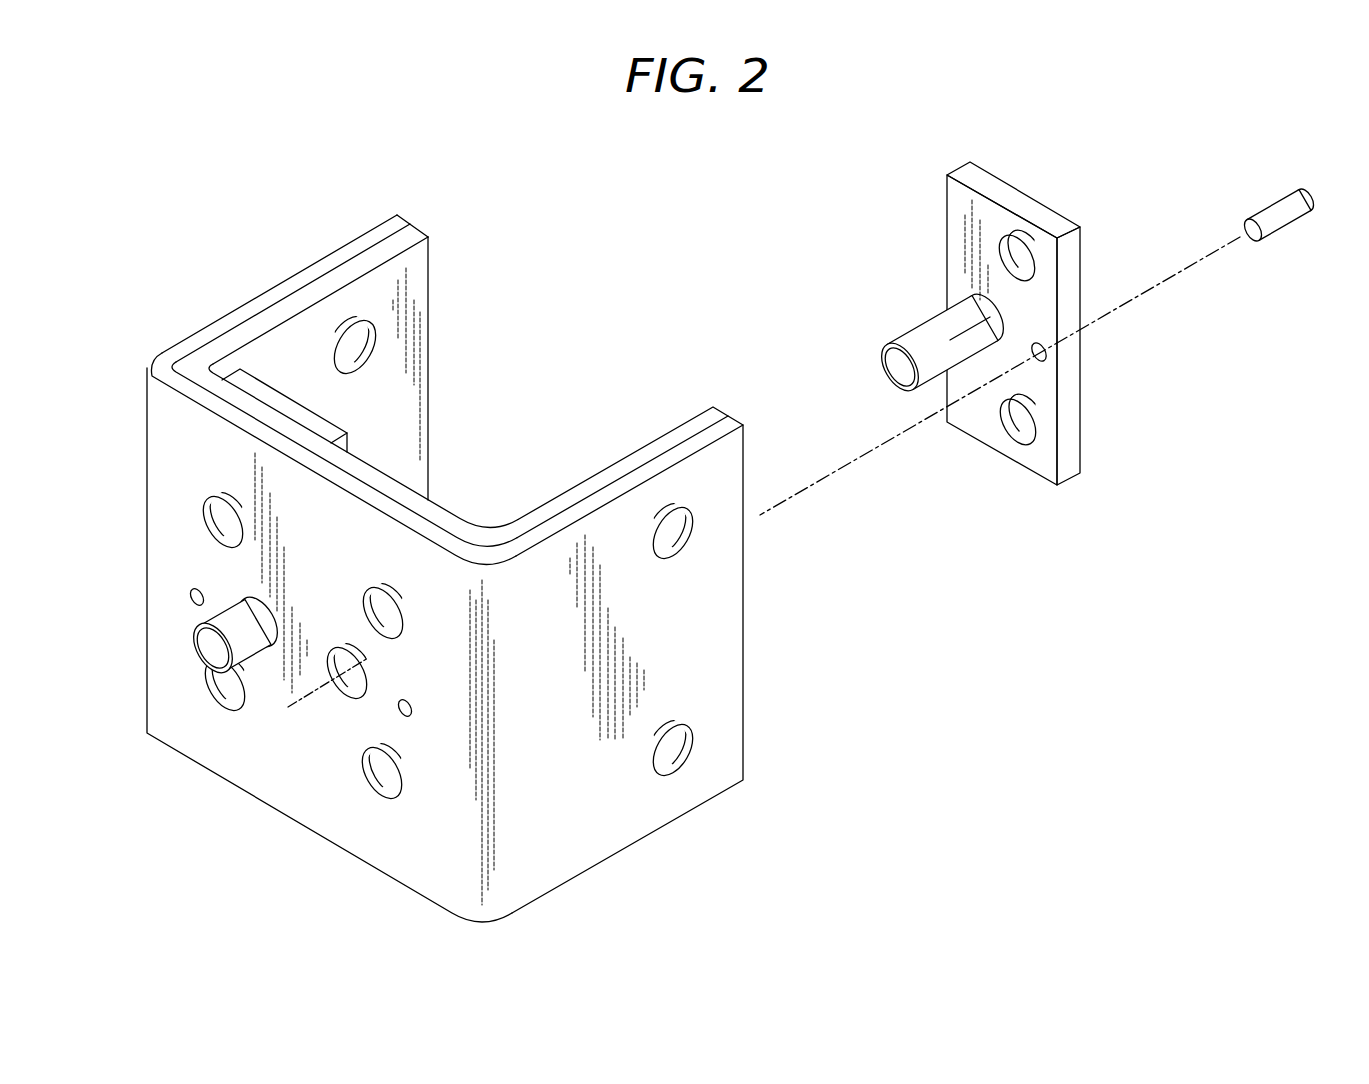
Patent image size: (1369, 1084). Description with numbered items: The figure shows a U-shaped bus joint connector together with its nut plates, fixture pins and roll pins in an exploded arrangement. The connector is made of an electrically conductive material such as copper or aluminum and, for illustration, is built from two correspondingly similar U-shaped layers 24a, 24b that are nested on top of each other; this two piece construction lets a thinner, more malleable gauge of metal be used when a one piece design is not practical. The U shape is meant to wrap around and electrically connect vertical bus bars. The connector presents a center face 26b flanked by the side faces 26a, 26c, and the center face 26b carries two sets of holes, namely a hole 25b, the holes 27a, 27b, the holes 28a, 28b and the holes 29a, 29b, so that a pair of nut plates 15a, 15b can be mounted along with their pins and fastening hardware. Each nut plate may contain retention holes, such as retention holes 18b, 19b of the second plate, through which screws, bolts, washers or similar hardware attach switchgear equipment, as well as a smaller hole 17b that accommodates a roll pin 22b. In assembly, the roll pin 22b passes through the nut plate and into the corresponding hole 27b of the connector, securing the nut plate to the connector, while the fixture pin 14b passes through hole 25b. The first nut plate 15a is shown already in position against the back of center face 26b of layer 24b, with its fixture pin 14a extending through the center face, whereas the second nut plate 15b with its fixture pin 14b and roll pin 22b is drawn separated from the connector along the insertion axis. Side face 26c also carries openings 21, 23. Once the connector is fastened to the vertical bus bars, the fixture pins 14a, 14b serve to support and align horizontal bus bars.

The fixture pin 14a is at (235, 623).
The fixture pin 14b is at (918, 327).
The nut plate 15a is at (248, 379).
The nut plate 15b is at (1008, 312).
The hole 17b is at (1050, 357).
The retention hole 18b is at (997, 250).
The retention hole 19b is at (1038, 420).
The hole 21 is at (701, 522).
The roll pin 22b is at (1292, 220).
The hole 23 is at (698, 742).
The layer 24a is at (403, 213).
The layer 24b is at (426, 234).
The hole 25b is at (348, 699).
The first wall 26a is at (325, 324).
The center face 26b is at (319, 833).
The third wall 26c is at (620, 823).
The hole 27a is at (189, 594).
The hole 27b is at (414, 709).
The hole 28a is at (204, 522).
The hole 28b is at (366, 600).
The hole 29a is at (209, 672).
The hole 29b is at (396, 803).